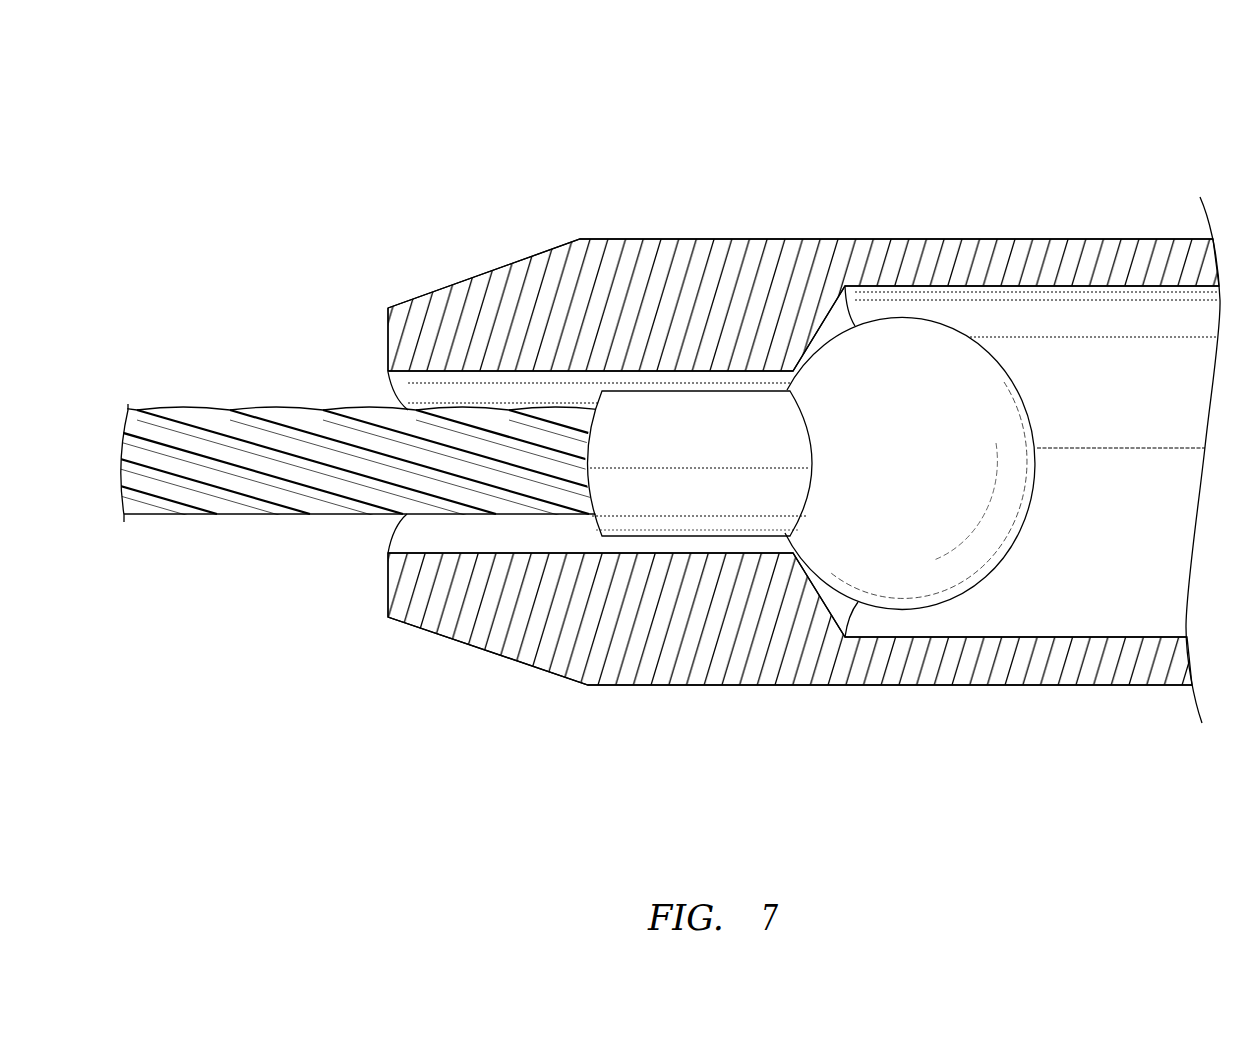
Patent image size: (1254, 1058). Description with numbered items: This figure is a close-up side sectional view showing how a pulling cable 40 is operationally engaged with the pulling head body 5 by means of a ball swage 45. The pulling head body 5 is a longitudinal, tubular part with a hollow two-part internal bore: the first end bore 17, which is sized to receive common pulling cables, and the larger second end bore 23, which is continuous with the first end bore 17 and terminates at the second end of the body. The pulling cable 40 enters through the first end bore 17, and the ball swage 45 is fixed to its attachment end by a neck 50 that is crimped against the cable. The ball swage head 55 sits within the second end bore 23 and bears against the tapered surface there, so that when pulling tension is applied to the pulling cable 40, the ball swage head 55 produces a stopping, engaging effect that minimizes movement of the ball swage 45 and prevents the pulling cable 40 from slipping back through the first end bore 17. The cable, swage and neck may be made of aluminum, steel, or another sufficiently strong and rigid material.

The pulling head body 5 is at (808, 62).
The first end bore 17 is at (455, 387).
The second end bore 23 is at (942, 617).
The pulling cable 40 is at (198, 408).
The ball swage 45 is at (783, 397).
The neck 50 is at (660, 536).
The ball swage head 55 is at (927, 377).